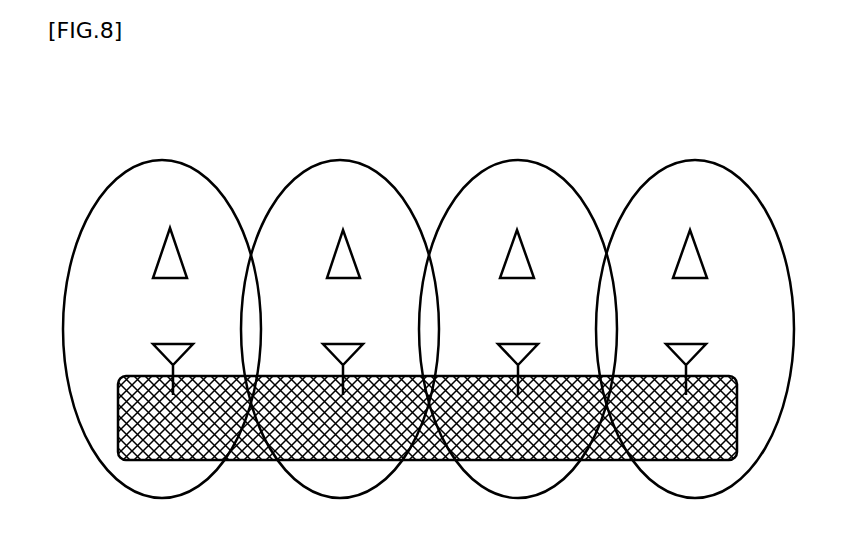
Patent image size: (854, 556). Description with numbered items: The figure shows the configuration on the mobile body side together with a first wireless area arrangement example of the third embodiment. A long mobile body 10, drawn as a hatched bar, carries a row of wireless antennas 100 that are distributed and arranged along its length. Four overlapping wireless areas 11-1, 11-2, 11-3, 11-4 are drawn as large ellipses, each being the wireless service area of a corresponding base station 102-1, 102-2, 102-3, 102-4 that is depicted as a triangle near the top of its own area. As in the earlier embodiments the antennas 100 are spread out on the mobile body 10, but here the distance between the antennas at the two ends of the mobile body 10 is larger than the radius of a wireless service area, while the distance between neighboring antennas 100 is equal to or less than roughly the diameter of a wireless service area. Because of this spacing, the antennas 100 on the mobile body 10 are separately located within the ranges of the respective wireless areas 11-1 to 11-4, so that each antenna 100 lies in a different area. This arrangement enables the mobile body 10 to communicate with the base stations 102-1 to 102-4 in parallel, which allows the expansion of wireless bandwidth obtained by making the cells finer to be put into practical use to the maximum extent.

The mobile body 10 is at (256, 462).
The wireless area 11-1 is at (163, 160).
The wireless area 11-2 is at (340, 160).
The wireless area 11-3 is at (518, 160).
The wireless area 11-4 is at (695, 160).
The antenna 100 is at (170, 362).
The base station 102-1 is at (170, 228).
The base station 102-2 is at (343, 230).
The base station 102-3 is at (517, 230).
The base station 102-4 is at (690, 230).